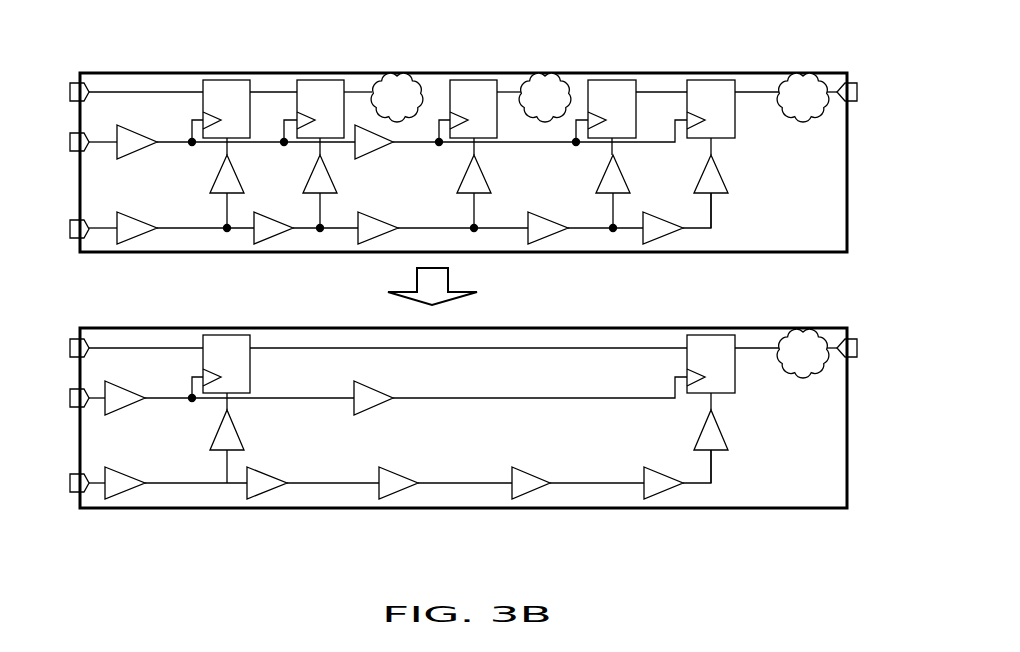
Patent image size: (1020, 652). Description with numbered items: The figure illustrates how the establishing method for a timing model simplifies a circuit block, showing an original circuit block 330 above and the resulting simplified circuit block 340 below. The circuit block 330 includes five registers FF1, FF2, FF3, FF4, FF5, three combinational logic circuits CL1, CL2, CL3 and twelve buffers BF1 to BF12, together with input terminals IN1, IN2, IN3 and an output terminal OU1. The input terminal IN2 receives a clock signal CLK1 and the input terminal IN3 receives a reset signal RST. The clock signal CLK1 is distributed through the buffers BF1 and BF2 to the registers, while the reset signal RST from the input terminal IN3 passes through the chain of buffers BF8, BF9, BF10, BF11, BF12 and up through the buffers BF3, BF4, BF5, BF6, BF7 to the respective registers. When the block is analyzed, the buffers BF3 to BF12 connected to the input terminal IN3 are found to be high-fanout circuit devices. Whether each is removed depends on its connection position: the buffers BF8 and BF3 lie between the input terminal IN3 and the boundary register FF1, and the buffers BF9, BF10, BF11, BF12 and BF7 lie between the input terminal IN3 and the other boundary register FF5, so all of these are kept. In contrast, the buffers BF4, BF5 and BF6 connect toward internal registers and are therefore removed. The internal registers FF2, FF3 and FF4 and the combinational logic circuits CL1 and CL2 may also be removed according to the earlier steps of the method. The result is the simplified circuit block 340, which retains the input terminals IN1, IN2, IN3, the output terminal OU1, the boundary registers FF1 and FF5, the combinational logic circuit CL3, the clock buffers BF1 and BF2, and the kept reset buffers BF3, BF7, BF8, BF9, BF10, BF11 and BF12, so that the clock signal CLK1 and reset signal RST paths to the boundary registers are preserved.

The circuit block 330 is at (847, 184).
The simplified circuit block 340 is at (847, 440).
The input terminal IN1 is at (79, 80).
The input terminal IN2 is at (77, 133).
The clock signal CLK1 is at (71, 271).
The reset signal RST is at (77, 357).
The input terminal IN3 is at (77, 243).
The output terminal OU1 is at (860, 92).
The register FF1 is at (230, 86).
The register FF2 is at (324, 86).
The register FF3 is at (478, 86).
The register FF4 is at (616, 86).
The register FF5 is at (708, 86).
The combinational logic circuit CL1 is at (398, 84).
The combinational logic circuit CL2 is at (545, 84).
The combinational logic circuit CL3 is at (803, 84).
The buffer BF1 is at (138, 134).
The buffer BF2 is at (376, 151).
The buffer BF3 is at (240, 178).
The buffer BF4 is at (335, 177).
The buffer BF5 is at (487, 180).
The buffer BF6 is at (626, 180).
The buffer BF7 is at (724, 180).
The buffer BF8 is at (136, 215).
The buffer BF9 is at (278, 240).
The buffer BF10 is at (383, 241).
The buffer BF11 is at (548, 241).
The buffer BF12 is at (662, 241).